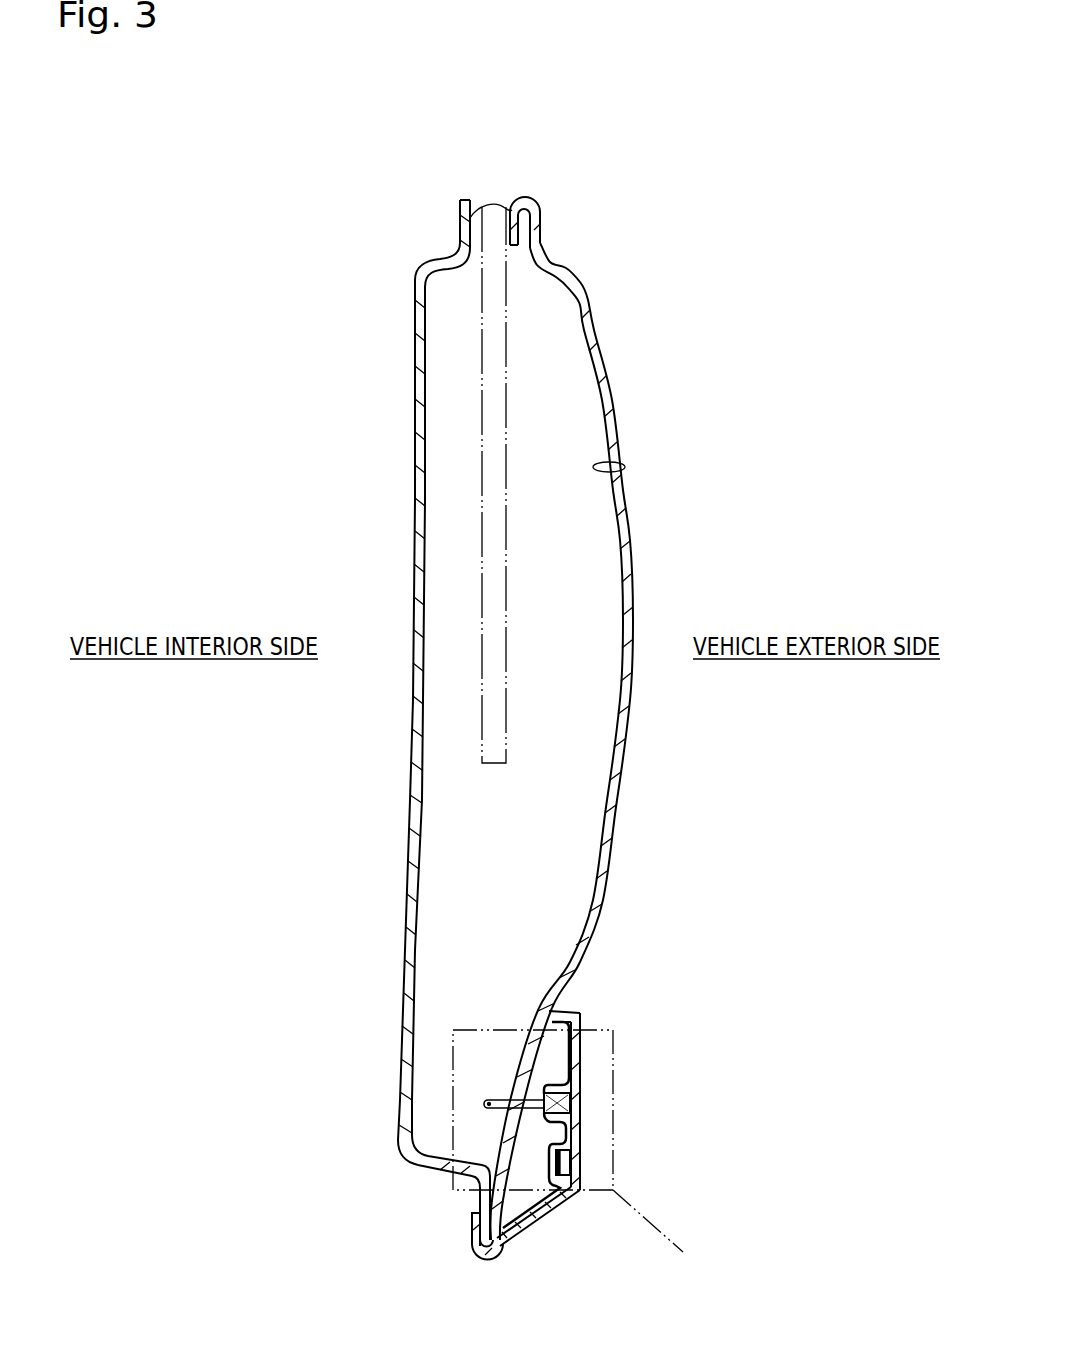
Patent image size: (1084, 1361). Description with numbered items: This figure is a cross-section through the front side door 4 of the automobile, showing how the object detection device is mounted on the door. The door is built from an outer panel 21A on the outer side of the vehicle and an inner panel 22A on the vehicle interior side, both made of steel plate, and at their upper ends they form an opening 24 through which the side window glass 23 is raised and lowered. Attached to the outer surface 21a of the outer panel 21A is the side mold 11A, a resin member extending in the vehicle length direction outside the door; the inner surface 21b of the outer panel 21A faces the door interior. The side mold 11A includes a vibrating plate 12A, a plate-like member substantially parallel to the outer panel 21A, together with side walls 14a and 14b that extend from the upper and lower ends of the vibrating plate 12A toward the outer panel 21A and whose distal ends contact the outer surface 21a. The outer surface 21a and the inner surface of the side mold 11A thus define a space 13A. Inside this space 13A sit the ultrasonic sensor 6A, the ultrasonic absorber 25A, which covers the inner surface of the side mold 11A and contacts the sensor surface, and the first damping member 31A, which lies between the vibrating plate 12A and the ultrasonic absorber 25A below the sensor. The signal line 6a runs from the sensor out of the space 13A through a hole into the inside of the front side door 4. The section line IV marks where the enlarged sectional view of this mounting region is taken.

The front side door 4 is at (519, 763).
The outer panel 21A is at (605, 370).
The outer surface of the outer panel 21a is at (610, 403).
The inner surface of the outer panel 21b is at (625, 467).
The inner panel 22A is at (415, 420).
The side window glass 23 is at (480, 325).
The opening 24 is at (480, 208).
The ultrasonic absorber 25A is at (502, 1240).
The space 13A is at (531, 1192).
The side wall 14a is at (562, 1010).
The side wall 14b is at (565, 1200).
The side mold 11A is at (580, 1037).
The vibrating plate 12A is at (536, 1125).
The ultrasonic sensor 6A is at (573, 1100).
The signal line 6a is at (486, 1101).
The first damping member 31A is at (573, 1167).
The section line IV is at (584, 1147).